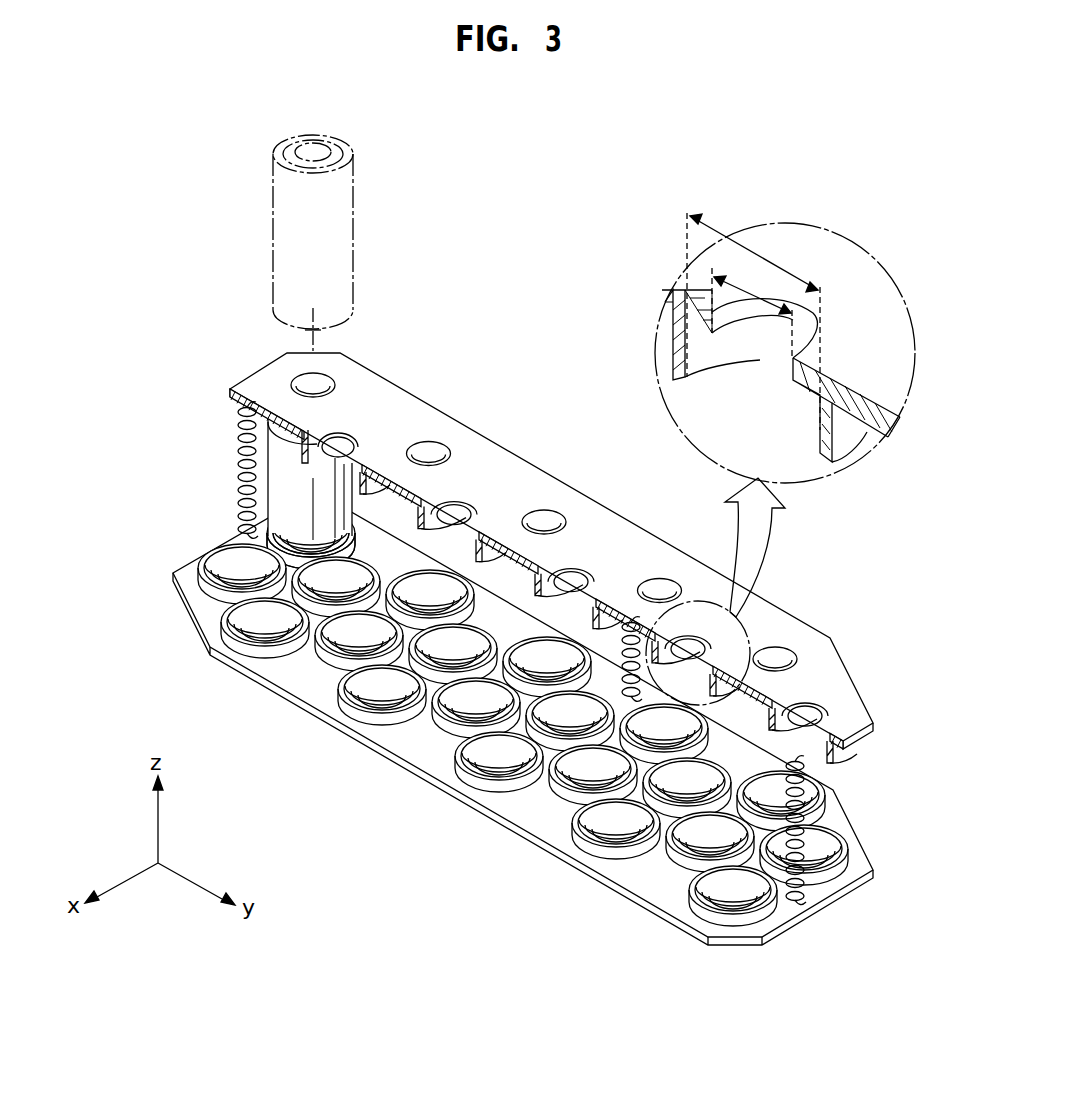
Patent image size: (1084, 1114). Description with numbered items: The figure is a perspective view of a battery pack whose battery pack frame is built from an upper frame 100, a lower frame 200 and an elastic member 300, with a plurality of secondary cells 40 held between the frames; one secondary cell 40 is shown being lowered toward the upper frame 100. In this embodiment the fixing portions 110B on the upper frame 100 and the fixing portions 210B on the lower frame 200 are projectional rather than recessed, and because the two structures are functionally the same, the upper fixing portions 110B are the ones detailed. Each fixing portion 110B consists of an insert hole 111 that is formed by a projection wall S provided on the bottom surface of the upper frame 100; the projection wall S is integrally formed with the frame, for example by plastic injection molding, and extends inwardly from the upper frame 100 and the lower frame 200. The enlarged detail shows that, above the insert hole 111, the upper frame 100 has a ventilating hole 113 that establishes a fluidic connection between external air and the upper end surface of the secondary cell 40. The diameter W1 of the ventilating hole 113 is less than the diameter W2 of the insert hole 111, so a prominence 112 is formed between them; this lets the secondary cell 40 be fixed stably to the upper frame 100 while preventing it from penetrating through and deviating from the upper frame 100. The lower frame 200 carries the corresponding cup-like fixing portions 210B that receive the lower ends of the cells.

The upper frame 100 is at (393, 397).
The fixing portion 110B is at (550, 513).
The ventilating hole 113 is at (685, 291).
The prominence 112 is at (673, 342).
The insert hole 111 is at (673, 371).
The projection wall S is at (663, 387).
The secondary cell 40 is at (283, 477).
The elastic member 300 is at (242, 498).
The fixing portion 210B is at (472, 777).
The lower frame 200 is at (535, 847).
The diameter of ventilating hole W1 is at (752, 313).
The diameter of insert hole W2 is at (753, 321).